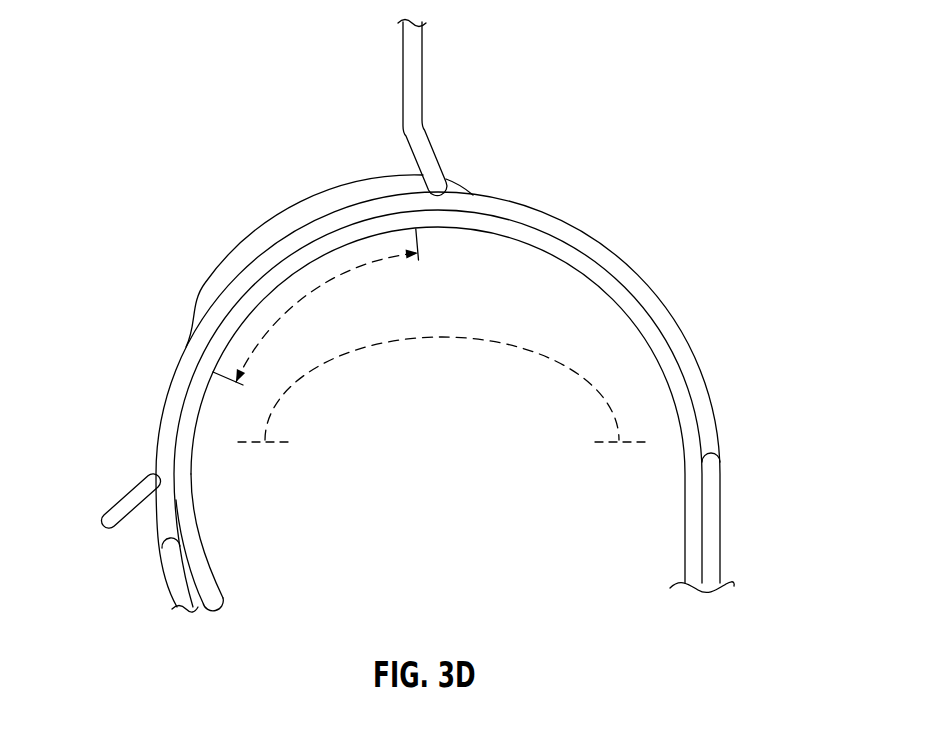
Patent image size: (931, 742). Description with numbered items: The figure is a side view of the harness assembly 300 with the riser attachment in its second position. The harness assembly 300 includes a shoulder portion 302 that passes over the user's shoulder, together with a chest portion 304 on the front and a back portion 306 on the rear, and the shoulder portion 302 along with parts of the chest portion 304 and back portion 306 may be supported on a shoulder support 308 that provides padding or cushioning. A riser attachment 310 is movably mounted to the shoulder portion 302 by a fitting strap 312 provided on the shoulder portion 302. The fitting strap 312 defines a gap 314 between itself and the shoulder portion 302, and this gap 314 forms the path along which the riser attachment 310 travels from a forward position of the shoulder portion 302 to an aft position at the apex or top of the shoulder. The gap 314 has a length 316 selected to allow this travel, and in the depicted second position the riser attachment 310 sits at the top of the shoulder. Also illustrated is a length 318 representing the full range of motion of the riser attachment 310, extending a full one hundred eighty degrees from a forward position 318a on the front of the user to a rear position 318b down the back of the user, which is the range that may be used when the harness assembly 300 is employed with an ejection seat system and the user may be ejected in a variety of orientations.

The harness assembly 300 is at (138, 145).
The shoulder portion 302 is at (600, 245).
The chest portion 304 is at (170, 573).
The back portion 306 is at (722, 540).
The shoulder support 308 is at (573, 258).
The riser attachment 310 is at (412, 72).
The fitting strap 312 is at (350, 190).
The gap 314 is at (288, 226).
The length 316 is at (303, 292).
The length 318 is at (445, 338).
The forward position 318a is at (275, 445).
The rear position 318b is at (602, 445).